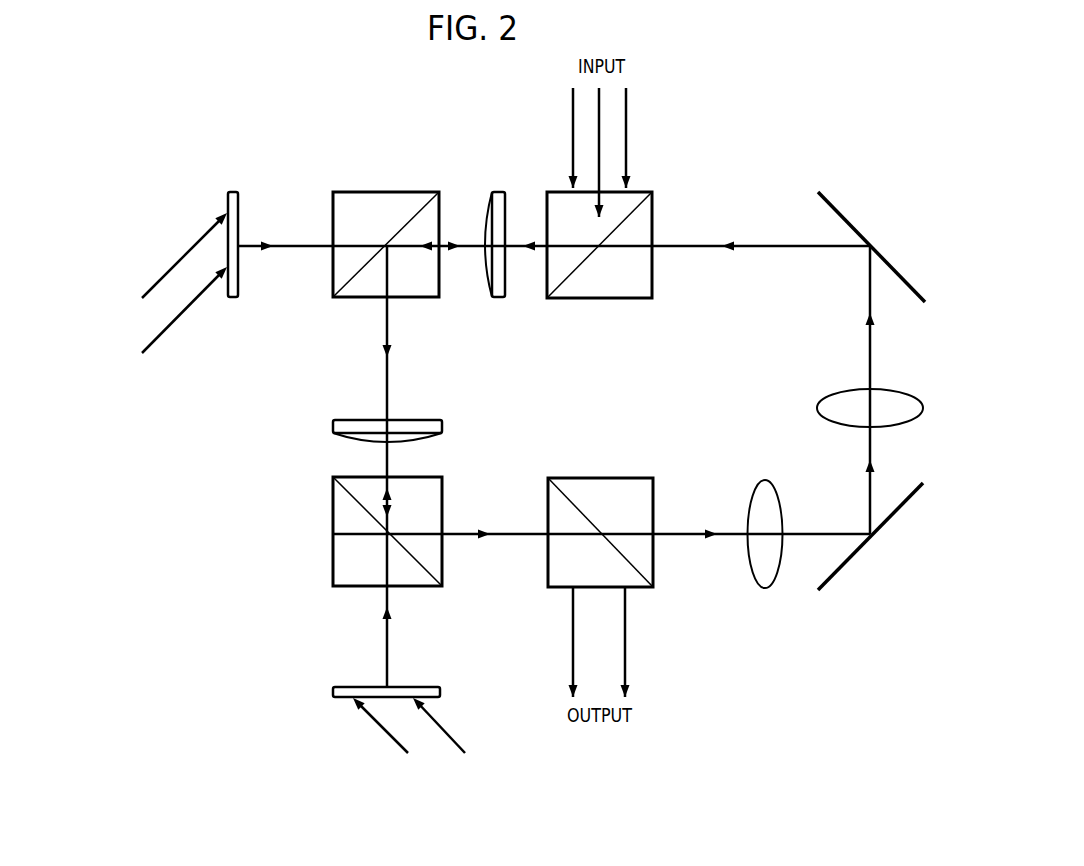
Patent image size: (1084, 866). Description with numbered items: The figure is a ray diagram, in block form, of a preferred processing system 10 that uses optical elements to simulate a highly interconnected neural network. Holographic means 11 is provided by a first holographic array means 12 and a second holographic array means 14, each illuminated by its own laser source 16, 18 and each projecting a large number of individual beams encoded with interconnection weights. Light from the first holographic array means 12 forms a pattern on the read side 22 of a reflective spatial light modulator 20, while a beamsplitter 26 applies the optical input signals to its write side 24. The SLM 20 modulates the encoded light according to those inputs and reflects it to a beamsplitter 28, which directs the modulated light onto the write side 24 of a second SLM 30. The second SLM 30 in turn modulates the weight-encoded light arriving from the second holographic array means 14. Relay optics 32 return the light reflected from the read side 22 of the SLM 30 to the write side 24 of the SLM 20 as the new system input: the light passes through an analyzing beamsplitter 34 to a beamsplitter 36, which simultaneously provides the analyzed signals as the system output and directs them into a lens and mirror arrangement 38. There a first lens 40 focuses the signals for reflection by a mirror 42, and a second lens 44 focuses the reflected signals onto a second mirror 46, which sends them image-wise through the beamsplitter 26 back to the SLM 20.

The processing system 10 is at (276, 197).
The holographic means 11 is at (170, 350).
The first holographic array means 12 is at (240, 276).
The second holographic array means 14 is at (352, 687).
The source 16 is at (180, 258).
The source 18 is at (456, 738).
The spatial light modulator 20 is at (414, 304).
The read side 22 is at (487, 282).
The write side 24 is at (508, 202).
The beamsplitter 26 is at (653, 220).
The beamsplitter 28 is at (357, 298).
The second spatial light modulator 30 is at (442, 427).
The relay optics 32 is at (684, 563).
The beamsplitter 34 is at (333, 508).
The beamsplitter 36 is at (690, 501).
The lens and mirror arrangement 38 is at (848, 459).
The first lens 40 is at (777, 581).
The mirror 42 is at (838, 572).
The second lens 44 is at (837, 393).
The second mirror 46 is at (855, 223).